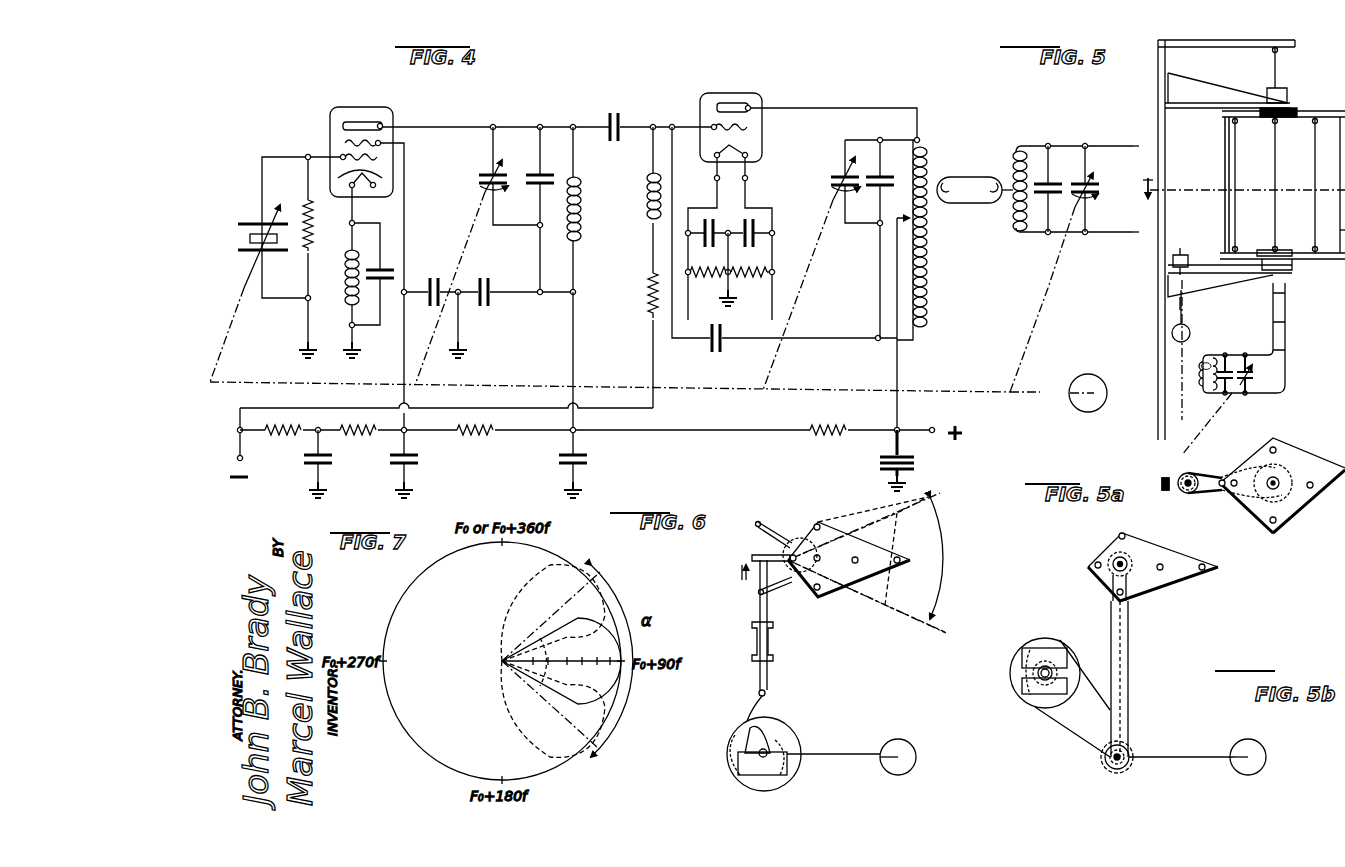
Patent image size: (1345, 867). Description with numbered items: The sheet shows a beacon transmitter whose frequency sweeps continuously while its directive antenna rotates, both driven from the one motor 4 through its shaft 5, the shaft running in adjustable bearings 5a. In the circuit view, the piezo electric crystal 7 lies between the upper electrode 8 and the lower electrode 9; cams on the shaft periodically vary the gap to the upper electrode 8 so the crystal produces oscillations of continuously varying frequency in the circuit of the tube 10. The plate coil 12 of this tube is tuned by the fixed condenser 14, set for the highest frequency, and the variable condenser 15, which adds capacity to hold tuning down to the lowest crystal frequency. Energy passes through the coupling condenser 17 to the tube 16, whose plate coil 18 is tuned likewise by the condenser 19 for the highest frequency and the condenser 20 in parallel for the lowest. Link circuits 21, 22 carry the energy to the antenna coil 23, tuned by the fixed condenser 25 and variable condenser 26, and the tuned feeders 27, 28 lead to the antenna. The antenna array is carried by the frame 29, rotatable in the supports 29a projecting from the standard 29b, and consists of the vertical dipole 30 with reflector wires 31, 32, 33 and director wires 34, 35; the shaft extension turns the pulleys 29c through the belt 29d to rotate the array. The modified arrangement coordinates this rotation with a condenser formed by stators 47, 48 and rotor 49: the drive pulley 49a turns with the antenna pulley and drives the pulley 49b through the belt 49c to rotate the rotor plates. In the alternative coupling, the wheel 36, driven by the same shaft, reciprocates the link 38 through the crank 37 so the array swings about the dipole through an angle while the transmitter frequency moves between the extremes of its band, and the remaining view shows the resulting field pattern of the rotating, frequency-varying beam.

In FIG. 4, the motor 4 is at (1090, 376).
In FIG. 5, the motor 4 is at (1190, 332).
In FIG. 5b, the motor 4 is at (1262, 745).
In FIG. 6, the motor 4 is at (908, 745).
In FIG. 4, the shaft 5 is at (1034, 392).
In FIG. 5, the shaft 5 is at (1176, 316).
In FIG. 5b, the shaft 5 is at (1162, 757).
In FIG. 6, the shaft 5 is at (830, 754).
In FIG. 4, the bearings 5a is at (1140, 187).
In FIG. 5, the bearings 5a is at (1140, 187).
In FIG. 4, the piezo electric crystal 7 is at (248, 242).
In FIG. 4, the upper electrode 8 is at (246, 222).
In FIG. 4, the lower electrode 9 is at (246, 250).
In FIG. 4, the tube 10 is at (355, 109).
In FIG. 4, the plate coil 12 is at (582, 214).
In FIG. 4, the condenser 14 is at (555, 166).
In FIG. 4, the variable condenser 15 is at (478, 174).
In FIG. 4, the tube 16 is at (745, 100).
In FIG. 4, the condenser 17 is at (620, 114).
In FIG. 4, the plate coil 18 is at (922, 298).
In FIG. 4, the condenser 19 is at (889, 182).
In FIG. 4, the condenser 20 is at (828, 182).
In FIG. 4, the link circuit 21 is at (950, 171).
In FIG. 4, the link circuit 22 is at (1005, 180).
In FIG. 5, the link circuit 22 is at (1198, 371).
In FIG. 4, the antenna coil 23 is at (1038, 154).
In FIG. 5, the antenna coil 23 is at (1216, 358).
In FIG. 4, the fixed condenser 25 is at (1054, 180).
In FIG. 5, the fixed condenser 25 is at (1234, 355).
In FIG. 4, the variable condenser 26 is at (1096, 176).
In FIG. 5, the variable condenser 26 is at (1259, 371).
In FIG. 4, the tuned feeder 27 is at (1092, 236).
In FIG. 5, the tuned feeder 27 is at (1273, 296).
In FIG. 4, the tuned feeder 28 is at (1121, 137).
In FIG. 5, the tuned feeder 28 is at (1288, 312).
In FIG. 5, the frame 29 is at (1310, 112).
In FIG. 5a, the frame 29 is at (1308, 445).
In FIG. 5b, the frame 29 is at (1140, 545).
In FIG. 6, the frame 29 is at (905, 556).
In FIG. 5, the supports 29a is at (1194, 92).
In FIG. 5, the standard 29b is at (1164, 60).
In FIG. 5a, the standard 29b is at (1152, 470).
In FIG. 5, the pulleys 29c is at (1282, 250).
In FIG. 5a, the pulleys 29c is at (1186, 490).
In FIG. 5b, the pulleys 29c is at (1108, 562).
In FIG. 5, the belt 29d is at (1222, 252).
In FIG. 5a, the belt 29d is at (1210, 470).
In FIG. 5b, the belt 29d is at (1130, 690).
In FIG. 5, the vertical dipole 30 is at (1277, 175).
In FIG. 5a, the vertical dipole 30 is at (1270, 490).
In FIG. 6, the vertical dipole 30 is at (817, 555).
In FIG. 5, the reflector wire 31 is at (1224, 155).
In FIG. 5a, the reflector wire 31 is at (1228, 490).
In FIG. 5b, the reflector wire 31 is at (1095, 567).
In FIG. 6, the reflector wire 31 is at (797, 562).
In FIG. 5a, the reflector wire 32 is at (1276, 447).
In FIG. 5b, the reflector wire 32 is at (1130, 522).
In FIG. 6, the reflector wire 32 is at (820, 524).
In FIG. 5a, the reflector wire 33 is at (1274, 523).
In FIG. 5b, the reflector wire 33 is at (1128, 598).
In FIG. 6, the reflector wire 33 is at (820, 592).
In FIG. 5, the director wire 34 is at (1317, 162).
In FIG. 5a, the director wire 34 is at (1311, 490).
In FIG. 5b, the director wire 34 is at (1160, 570).
In FIG. 6, the director wire 34 is at (855, 564).
In FIG. 5, the director wire 35 is at (1336, 185).
In FIG. 5b, the director wire 35 is at (1203, 572).
In FIG. 6, the director wire 35 is at (897, 564).
In FIG. 5, the wheel 36 is at (1337, 208).
In FIG. 6, the wheel 36 is at (782, 735).
In FIG. 6, the crank 37 is at (767, 702).
In FIG. 6, the link 38 is at (758, 606).
In FIG. 5b, the stator 47 is at (1028, 648).
In FIG. 5b, the stator 48 is at (1032, 694).
In FIG. 5b, the rotor 49 is at (1060, 645).
In FIG. 5b, the drive pulley 49a is at (1108, 770).
In FIG. 5b, the pulley 49b is at (1012, 678).
In FIG. 5b, the belt 49c is at (1060, 740).